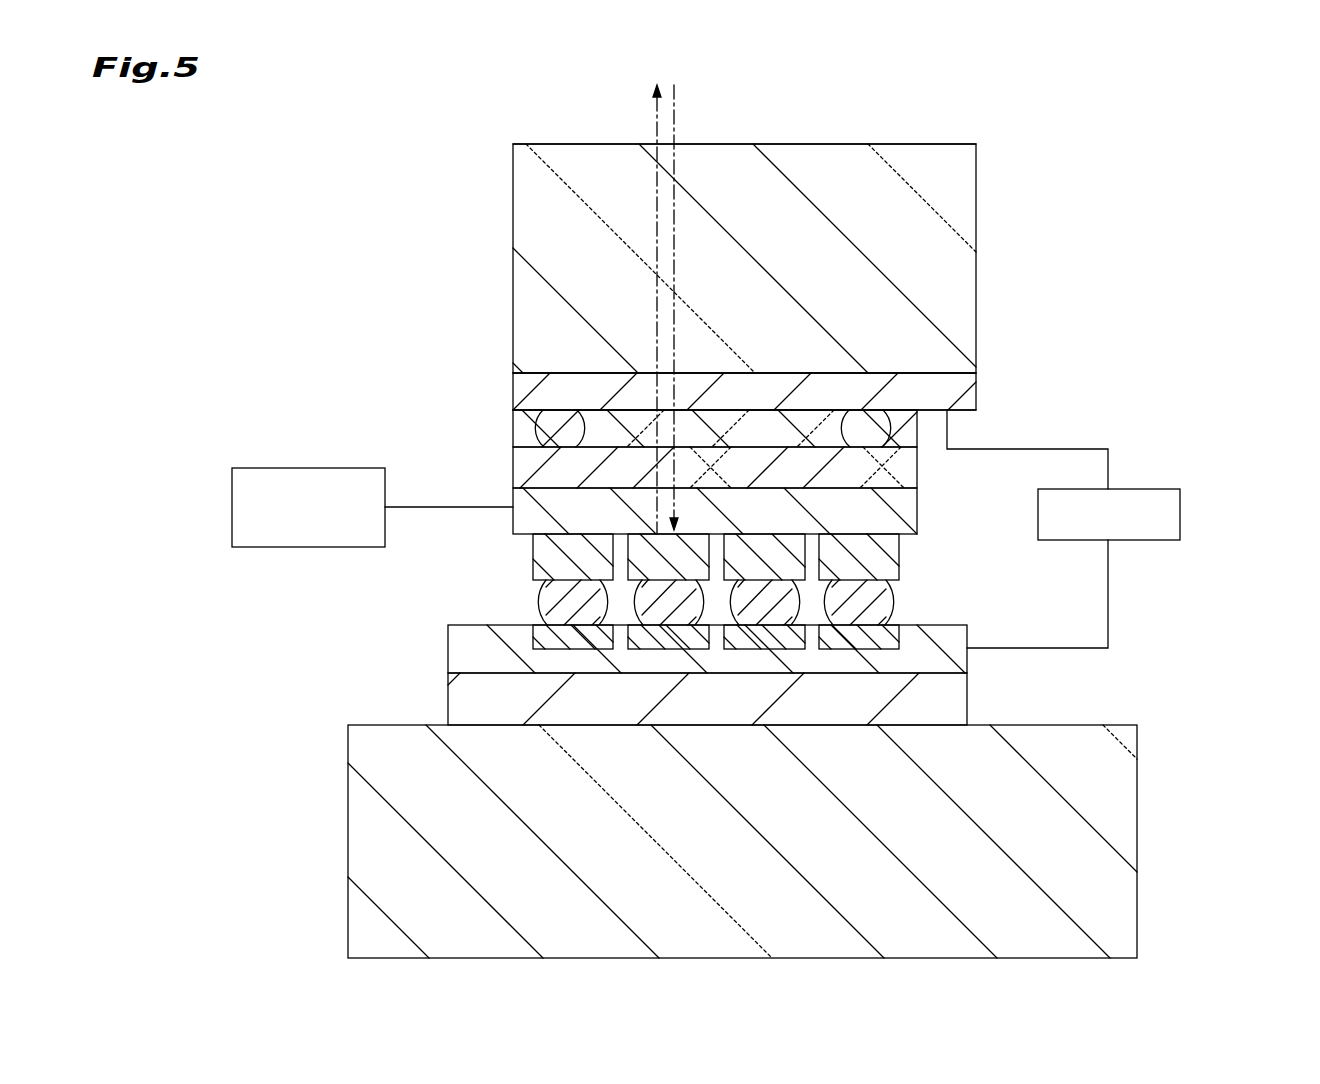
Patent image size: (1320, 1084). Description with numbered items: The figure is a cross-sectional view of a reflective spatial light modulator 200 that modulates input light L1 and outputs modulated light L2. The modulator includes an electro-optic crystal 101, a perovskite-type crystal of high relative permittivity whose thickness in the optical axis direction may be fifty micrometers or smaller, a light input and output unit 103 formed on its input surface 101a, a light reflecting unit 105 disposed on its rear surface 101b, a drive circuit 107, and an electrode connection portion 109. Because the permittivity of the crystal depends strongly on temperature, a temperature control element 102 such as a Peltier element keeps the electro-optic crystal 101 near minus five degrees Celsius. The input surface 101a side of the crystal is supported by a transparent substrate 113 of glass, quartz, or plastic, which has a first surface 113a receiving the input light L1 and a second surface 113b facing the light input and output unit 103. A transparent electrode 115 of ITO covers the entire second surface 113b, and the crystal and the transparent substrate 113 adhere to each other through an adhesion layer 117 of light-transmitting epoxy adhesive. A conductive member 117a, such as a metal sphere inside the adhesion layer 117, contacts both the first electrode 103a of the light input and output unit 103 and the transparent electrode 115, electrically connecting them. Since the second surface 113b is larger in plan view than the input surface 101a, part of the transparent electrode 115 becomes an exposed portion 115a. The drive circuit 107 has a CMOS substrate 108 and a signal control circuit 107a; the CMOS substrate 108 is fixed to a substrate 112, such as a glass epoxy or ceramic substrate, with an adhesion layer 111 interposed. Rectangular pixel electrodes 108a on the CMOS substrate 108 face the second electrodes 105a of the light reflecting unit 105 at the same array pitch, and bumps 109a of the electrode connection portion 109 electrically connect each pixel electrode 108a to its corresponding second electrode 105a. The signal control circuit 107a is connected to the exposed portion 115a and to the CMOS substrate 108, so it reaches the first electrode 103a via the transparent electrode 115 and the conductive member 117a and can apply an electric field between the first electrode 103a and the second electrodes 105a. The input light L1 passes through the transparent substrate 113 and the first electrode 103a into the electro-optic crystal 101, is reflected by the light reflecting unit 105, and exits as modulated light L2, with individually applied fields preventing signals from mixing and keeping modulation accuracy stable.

The spatial light modulator 200 is at (1142, 153).
The transparent substrate 113 is at (976, 232).
The first surface 113a is at (945, 145).
The second surface 113b is at (953, 383).
The transparent electrode 115 is at (976, 400).
The exposed portion 115a is at (960, 410).
The adhesion layer 117 is at (513, 425).
The conductive member 117a is at (560, 412).
The light input and output unit 103 is at (632, 420).
The first electrode 103a is at (632, 420).
The electro-optic crystal 101 is at (724, 504).
The input surface 101a is at (917, 477).
The rear surface 101b is at (905, 534).
The temperature control element 102 is at (252, 468).
The light reflecting unit 105 is at (634, 558).
The second electrodes 105a is at (533, 570).
The electrode connection portion 109 is at (632, 602).
The bumps 109a is at (538, 605).
The drive circuit 107 is at (841, 543).
The signal control circuit 107a is at (1155, 541).
The CMOS substrate 108 is at (967, 665).
The pixel electrodes 108a is at (533, 637).
The adhesion layer 111 is at (967, 695).
The substrate 112 is at (1137, 815).
The input light L1 is at (676, 118).
The modulated light L2 is at (655, 120).